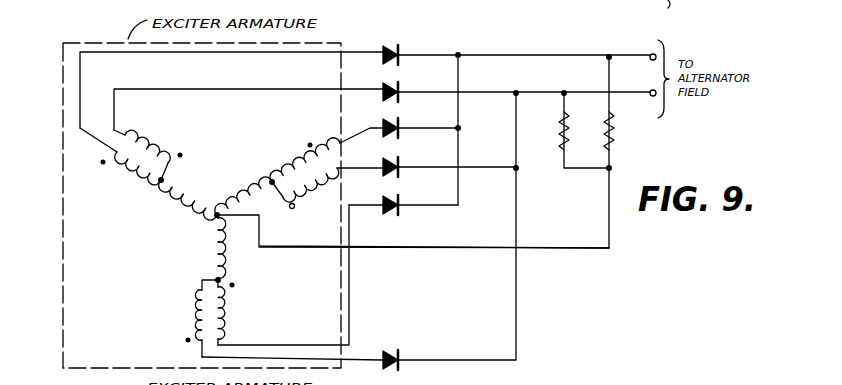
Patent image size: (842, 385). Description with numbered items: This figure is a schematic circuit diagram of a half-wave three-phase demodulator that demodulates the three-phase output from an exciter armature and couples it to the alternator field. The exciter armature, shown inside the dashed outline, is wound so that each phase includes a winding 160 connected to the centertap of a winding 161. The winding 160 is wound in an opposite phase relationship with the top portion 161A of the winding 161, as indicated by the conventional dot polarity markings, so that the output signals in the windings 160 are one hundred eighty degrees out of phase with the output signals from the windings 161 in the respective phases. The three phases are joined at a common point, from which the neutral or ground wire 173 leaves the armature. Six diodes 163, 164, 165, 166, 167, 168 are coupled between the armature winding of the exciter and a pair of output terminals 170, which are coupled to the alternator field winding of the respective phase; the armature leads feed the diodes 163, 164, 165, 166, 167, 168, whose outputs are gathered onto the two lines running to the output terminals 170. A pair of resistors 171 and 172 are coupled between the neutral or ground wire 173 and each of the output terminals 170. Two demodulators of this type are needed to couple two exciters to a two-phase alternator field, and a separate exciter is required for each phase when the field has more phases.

The winding 160 is at (148, 142).
The winding 161 is at (158, 185).
The top portion of the winding 161A is at (124, 170).
The diode 163 is at (390, 47).
The diode 164 is at (390, 84).
The diode 165 is at (390, 120).
The diode 166 is at (390, 159).
The diode 167 is at (390, 197).
The diode 168 is at (388, 352).
The output terminals 170 is at (652, 82).
The resistor 171 is at (612, 136).
The resistor 172 is at (560, 117).
The neutral or ground wire 173 is at (565, 250).